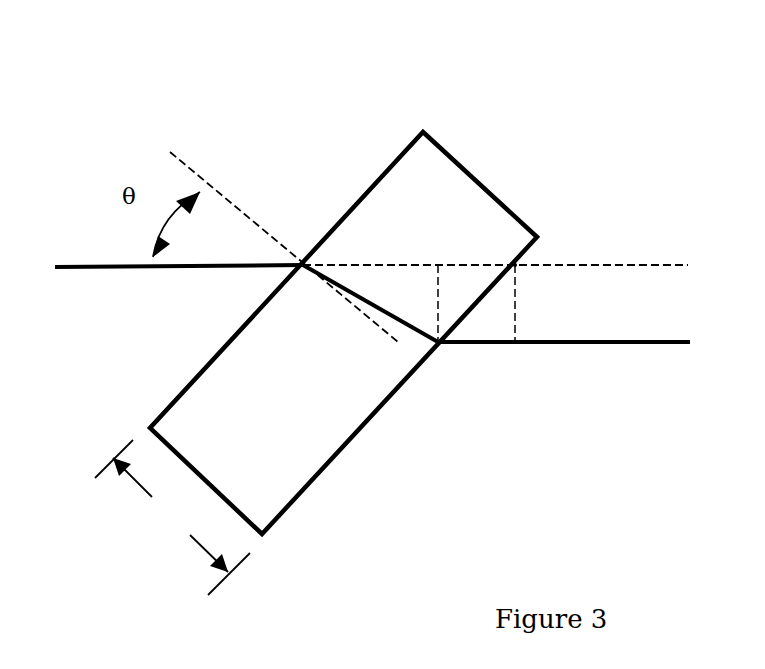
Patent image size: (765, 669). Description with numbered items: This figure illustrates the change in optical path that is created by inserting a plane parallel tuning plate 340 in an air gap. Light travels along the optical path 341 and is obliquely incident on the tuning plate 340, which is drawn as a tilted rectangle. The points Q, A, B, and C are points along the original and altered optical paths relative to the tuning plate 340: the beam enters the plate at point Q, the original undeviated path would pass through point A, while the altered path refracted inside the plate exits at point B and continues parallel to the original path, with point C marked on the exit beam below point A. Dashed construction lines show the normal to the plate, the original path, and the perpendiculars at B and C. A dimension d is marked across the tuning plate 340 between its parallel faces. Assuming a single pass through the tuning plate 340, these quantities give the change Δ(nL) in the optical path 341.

The tuning plate 340 is at (445, 148).
The optical path 341 is at (130, 267).
The point Q is at (303, 265).
The point A is at (515, 265).
The point B is at (442, 347).
The point C is at (518, 345).
The plate thickness d is at (172, 517).